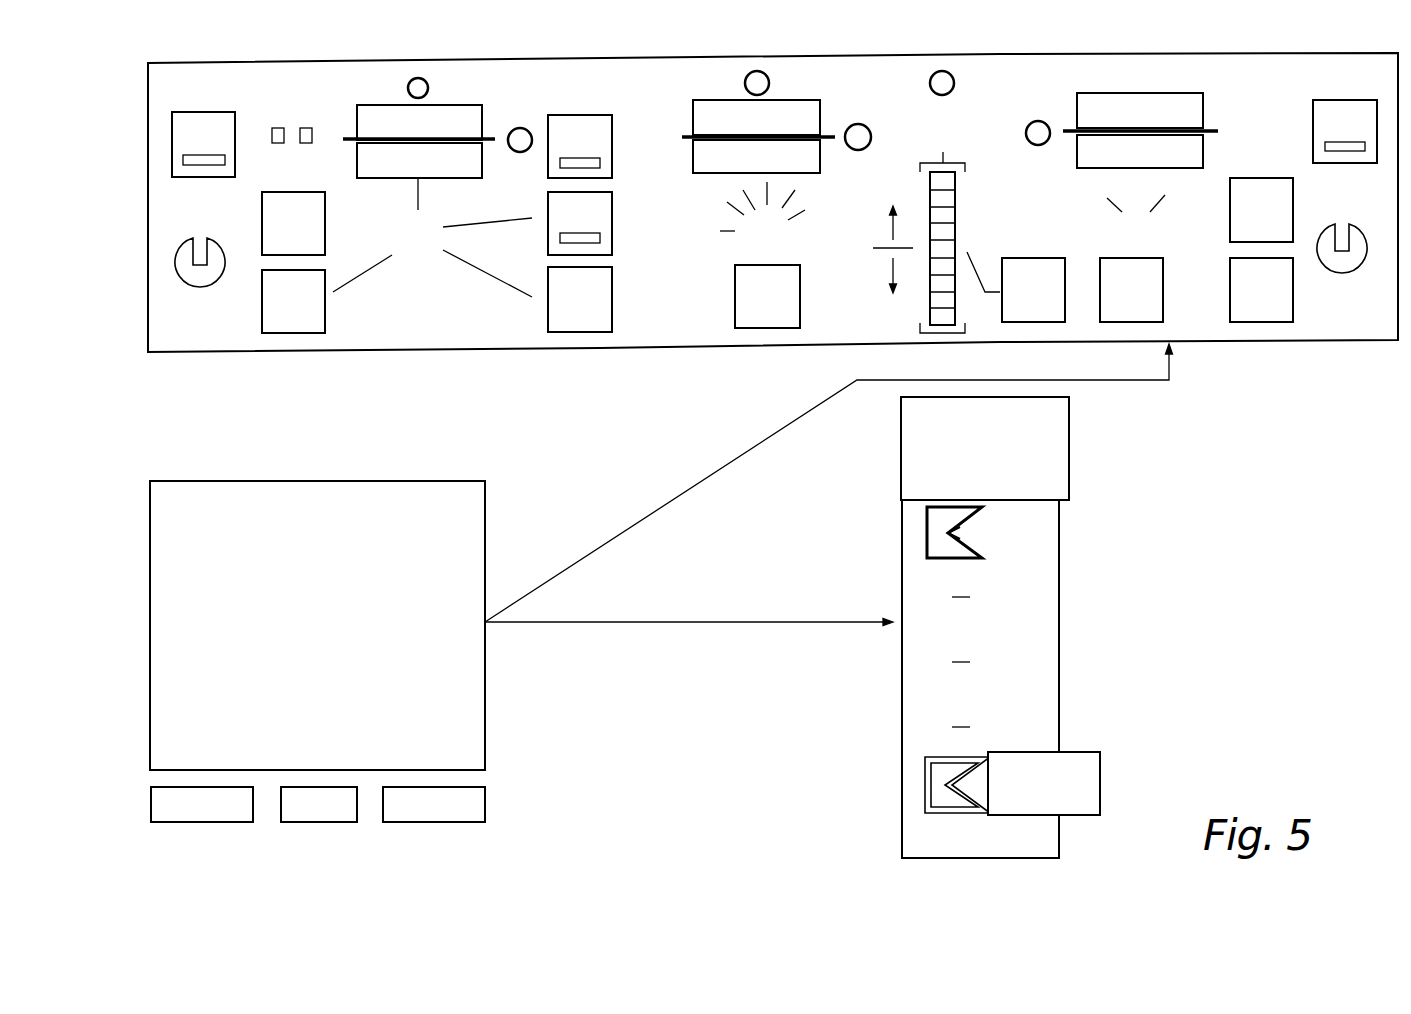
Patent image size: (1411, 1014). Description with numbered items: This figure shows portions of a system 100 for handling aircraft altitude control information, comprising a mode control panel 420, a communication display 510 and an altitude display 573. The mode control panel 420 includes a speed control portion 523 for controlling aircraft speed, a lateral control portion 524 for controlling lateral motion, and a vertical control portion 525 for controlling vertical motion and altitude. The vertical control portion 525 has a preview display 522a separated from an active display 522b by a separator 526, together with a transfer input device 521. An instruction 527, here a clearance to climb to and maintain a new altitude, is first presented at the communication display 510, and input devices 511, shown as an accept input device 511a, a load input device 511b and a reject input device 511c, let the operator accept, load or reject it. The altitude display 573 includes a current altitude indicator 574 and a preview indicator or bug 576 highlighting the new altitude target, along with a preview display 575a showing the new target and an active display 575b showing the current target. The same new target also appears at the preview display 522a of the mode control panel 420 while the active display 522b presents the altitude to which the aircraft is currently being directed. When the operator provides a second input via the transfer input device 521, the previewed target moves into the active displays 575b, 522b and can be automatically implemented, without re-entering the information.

The flight deck display system 100 is at (1300, 688).
The mode control panel 420 is at (535, 62).
The communication display 510 is at (400, 481).
The input devices 511 is at (440, 866).
The accept input device 511a is at (198, 822).
The load input device 511b is at (300, 822).
The reject input device 511c is at (430, 822).
The transfer input device 521 is at (1040, 120).
The preview display 522a is at (1205, 152).
The active display 522b is at (1205, 108).
The speed control portion 523 is at (405, 50).
The lateral control portion 524 is at (775, 48).
The vertical control portion 525 is at (1148, 44).
The separator 526 is at (1065, 128).
The instruction 527 is at (152, 528).
The altitude display 573 is at (1132, 539).
The current altitude indicator 574 is at (1124, 760).
The preview display 575a is at (1078, 468).
The active display 575b is at (1078, 422).
The preview indicator 576 is at (927, 532).